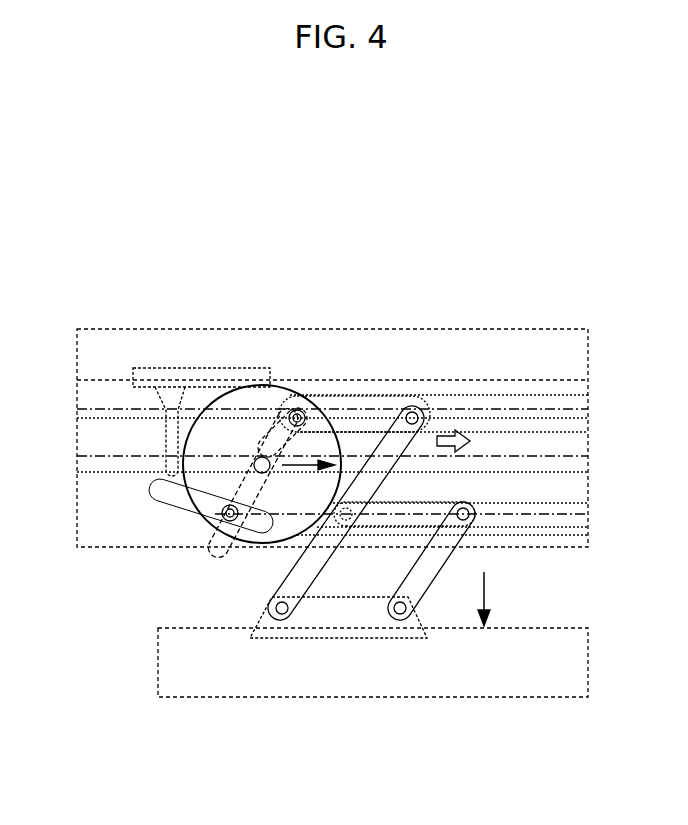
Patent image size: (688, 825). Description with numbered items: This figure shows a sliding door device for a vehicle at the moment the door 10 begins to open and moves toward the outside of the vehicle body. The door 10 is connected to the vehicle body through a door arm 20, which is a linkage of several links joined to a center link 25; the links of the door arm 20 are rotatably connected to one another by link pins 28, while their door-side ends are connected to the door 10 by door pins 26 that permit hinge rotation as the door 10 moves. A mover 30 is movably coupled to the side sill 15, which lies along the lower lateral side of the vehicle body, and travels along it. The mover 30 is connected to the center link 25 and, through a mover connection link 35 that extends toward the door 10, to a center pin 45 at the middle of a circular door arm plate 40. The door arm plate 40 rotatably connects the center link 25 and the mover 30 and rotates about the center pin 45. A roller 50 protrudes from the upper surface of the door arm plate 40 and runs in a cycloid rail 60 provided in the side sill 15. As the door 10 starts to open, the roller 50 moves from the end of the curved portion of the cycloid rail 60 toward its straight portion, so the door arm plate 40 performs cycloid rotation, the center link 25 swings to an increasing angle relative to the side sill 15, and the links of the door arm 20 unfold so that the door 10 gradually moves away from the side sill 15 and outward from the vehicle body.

The door 10 is at (178, 677).
The side sill 15 is at (555, 350).
The door arm 20 is at (445, 510).
The center link 25 is at (256, 530).
The door pin 26 is at (284, 612).
The link pin 28 is at (410, 411).
The mover 30 is at (140, 378).
The mover connection link 35 is at (170, 432).
The door arm plate 40 is at (297, 402).
The center pin 45 is at (254, 462).
The roller 50 is at (226, 520).
The cycloid rail 60 is at (488, 400).